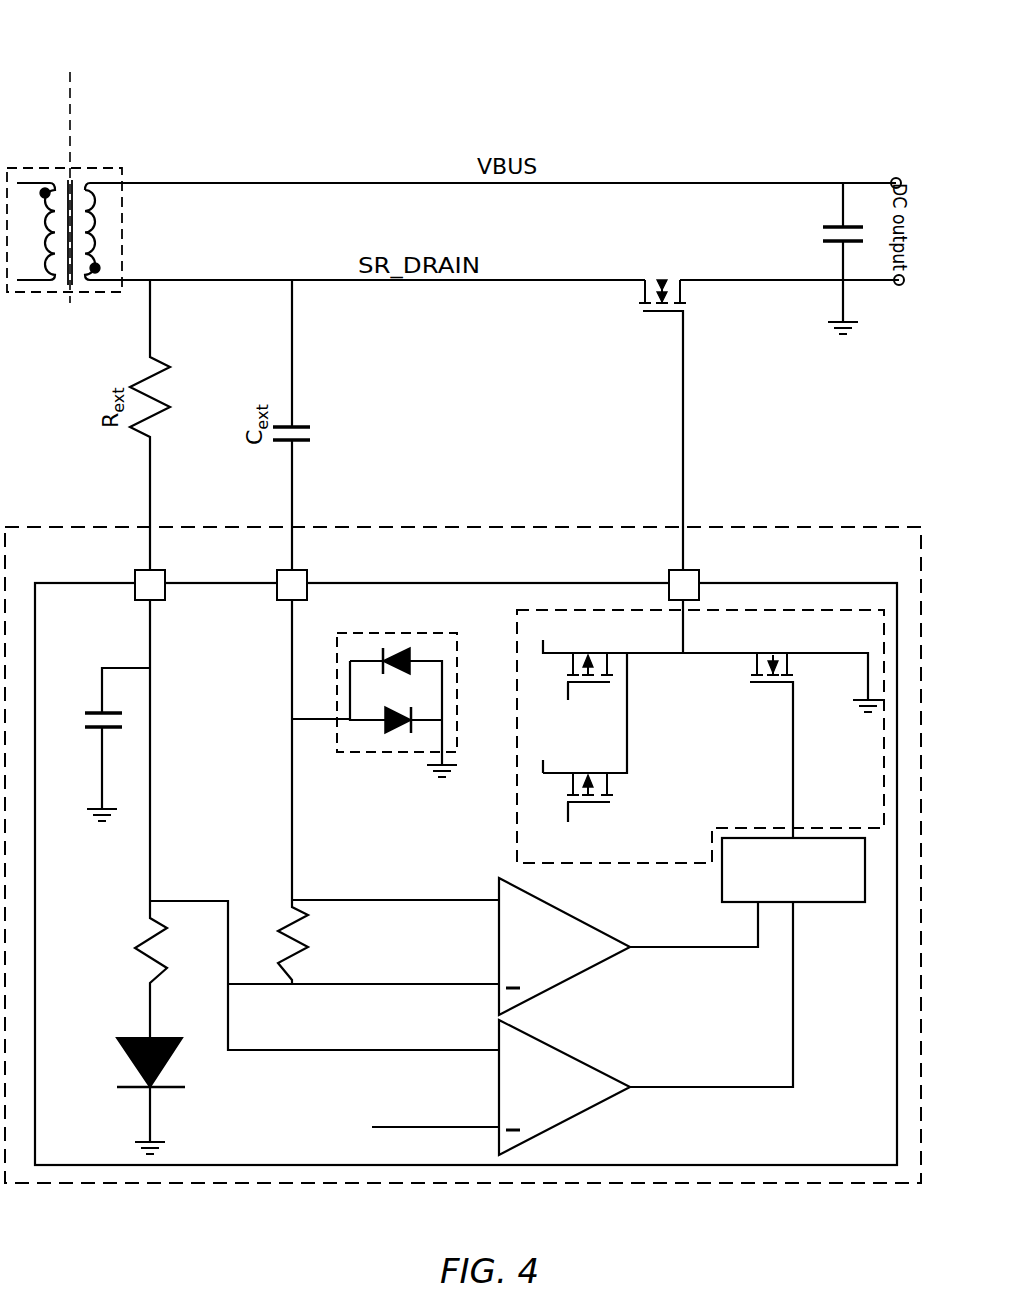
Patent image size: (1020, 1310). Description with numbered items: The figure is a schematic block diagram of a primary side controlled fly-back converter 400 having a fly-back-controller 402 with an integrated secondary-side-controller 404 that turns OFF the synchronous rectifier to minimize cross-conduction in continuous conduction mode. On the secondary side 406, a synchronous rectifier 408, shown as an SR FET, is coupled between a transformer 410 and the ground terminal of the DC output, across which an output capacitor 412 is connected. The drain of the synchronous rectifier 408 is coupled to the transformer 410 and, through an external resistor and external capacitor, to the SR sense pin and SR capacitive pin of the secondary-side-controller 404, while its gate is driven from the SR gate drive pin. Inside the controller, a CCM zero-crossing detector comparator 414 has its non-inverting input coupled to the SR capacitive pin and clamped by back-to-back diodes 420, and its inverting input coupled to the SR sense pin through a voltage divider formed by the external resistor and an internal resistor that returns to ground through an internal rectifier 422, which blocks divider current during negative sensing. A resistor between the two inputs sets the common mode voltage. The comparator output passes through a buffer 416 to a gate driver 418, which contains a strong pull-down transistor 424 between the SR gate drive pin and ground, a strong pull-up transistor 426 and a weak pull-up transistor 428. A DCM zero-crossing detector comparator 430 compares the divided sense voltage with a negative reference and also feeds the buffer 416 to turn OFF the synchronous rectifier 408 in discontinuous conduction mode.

The PSC fly-back converter 400 is at (47, 13).
The fly-back-controller 402 is at (463, 855).
The integrated secondary-side-controller 404 is at (466, 856).
The secondary side 406 is at (66, 187).
The synchronous rectifier 408 is at (660, 274).
The transformer 410 is at (28, 168).
The output capacitor 412 is at (823, 234).
The CCM zero-crossing detector comparator 414 is at (628, 946).
The buffer 416 is at (793, 870).
The gate driver 418 is at (700, 731).
The back-to-back diodes 420 is at (392, 633).
The internal rectifier 422 is at (120, 1038).
The pull-down transistor 424 is at (765, 644).
The strong pull-up transistor 426 is at (598, 767).
The weak pull-up transistor 428 is at (597, 644).
The DCM zero-crossing detector comparator 430 is at (646, 1028).